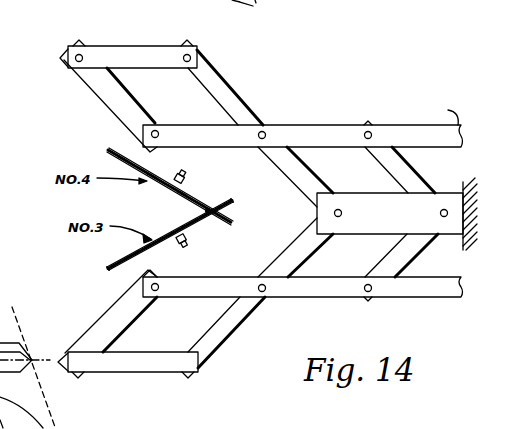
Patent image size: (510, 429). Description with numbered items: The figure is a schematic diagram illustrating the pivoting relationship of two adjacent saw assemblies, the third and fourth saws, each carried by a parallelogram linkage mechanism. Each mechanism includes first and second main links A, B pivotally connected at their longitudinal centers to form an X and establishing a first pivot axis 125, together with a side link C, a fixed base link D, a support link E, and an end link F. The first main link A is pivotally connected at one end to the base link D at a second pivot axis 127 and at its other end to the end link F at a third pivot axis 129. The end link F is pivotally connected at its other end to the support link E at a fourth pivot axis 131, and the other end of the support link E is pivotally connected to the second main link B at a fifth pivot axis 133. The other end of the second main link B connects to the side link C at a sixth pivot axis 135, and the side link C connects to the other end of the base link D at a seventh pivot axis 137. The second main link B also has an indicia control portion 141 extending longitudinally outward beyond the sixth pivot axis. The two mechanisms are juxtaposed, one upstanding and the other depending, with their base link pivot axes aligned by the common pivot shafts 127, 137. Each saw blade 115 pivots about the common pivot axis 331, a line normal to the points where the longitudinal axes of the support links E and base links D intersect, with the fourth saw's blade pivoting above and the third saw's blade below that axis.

The fourth pivot axis 131 is at (76, 43).
The third pivot axis 129 is at (184, 61).
The fifth pivot axis 133 is at (158, 131).
The first pivot axis 125 is at (266, 133).
The sixth pivot axis 135 is at (380, 117).
The indicia control portion 141 is at (438, 322).
The second pivot axis 127 is at (334, 213).
The seventh pivot axis 137 is at (440, 213).
The front common pivot axis 331 is at (205, 211).
The saw blade 115 is at (118, 260).
The first main link A is at (237, 92).
The second main link B is at (214, 138).
The side link C is at (412, 168).
The base link D is at (377, 203).
The support link E is at (100, 105).
The end link F is at (143, 50).